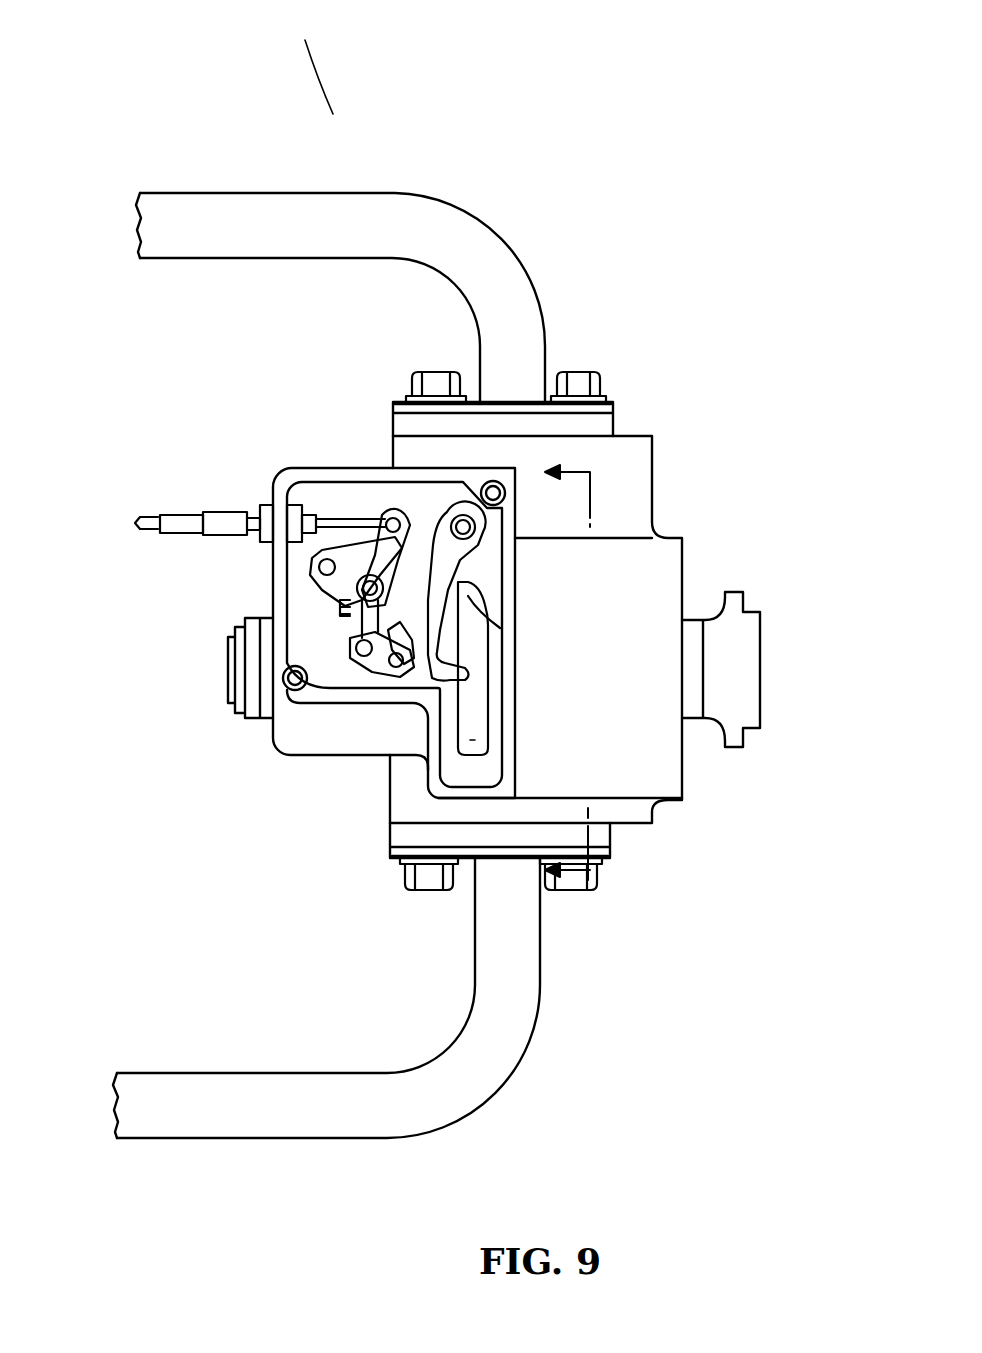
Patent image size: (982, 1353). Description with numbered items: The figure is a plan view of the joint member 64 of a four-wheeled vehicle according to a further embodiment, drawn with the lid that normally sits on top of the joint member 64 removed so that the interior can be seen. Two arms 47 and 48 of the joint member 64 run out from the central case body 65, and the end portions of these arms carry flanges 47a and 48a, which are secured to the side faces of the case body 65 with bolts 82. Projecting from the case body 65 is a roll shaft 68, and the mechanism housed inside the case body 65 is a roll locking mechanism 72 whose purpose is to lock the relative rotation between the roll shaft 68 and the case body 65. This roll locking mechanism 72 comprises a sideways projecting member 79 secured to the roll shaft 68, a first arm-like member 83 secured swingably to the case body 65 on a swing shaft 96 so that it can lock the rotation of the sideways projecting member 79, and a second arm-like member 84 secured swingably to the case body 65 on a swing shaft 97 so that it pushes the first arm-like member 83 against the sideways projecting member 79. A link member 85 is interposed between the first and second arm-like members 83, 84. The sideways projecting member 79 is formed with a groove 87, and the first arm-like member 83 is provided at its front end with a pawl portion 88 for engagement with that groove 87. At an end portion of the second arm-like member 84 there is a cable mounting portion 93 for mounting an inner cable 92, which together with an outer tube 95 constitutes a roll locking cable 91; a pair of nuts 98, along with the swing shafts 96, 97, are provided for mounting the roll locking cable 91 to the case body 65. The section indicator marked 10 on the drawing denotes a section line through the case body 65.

The joint member 64 is at (337, 120).
The arm 47 is at (252, 193).
The flange 47a is at (614, 406).
The arm 48 is at (257, 1138).
The flange 48a is at (390, 852).
The bolt 82 is at (410, 388).
The case body 65 is at (684, 566).
The roll shaft 68 is at (762, 703).
The roll locking mechanism 72 is at (503, 572).
The groove 87 is at (487, 645).
The sideways projecting member 79 is at (495, 712).
The roll locking cable 91 is at (177, 511).
The outer tube 95 is at (168, 538).
The nut 98 is at (270, 506).
The inner cable 92 is at (343, 522).
The cable mounting portion 93 is at (387, 513).
The second arm-like member 84 is at (313, 560).
The swing shaft 97 is at (358, 592).
The link member 85 is at (432, 688).
The pawl portion 88 is at (445, 672).
The first arm-like member 83 is at (423, 527).
The swing shaft 96 is at (461, 514).
The section line 10- 10 is at (602, 682).